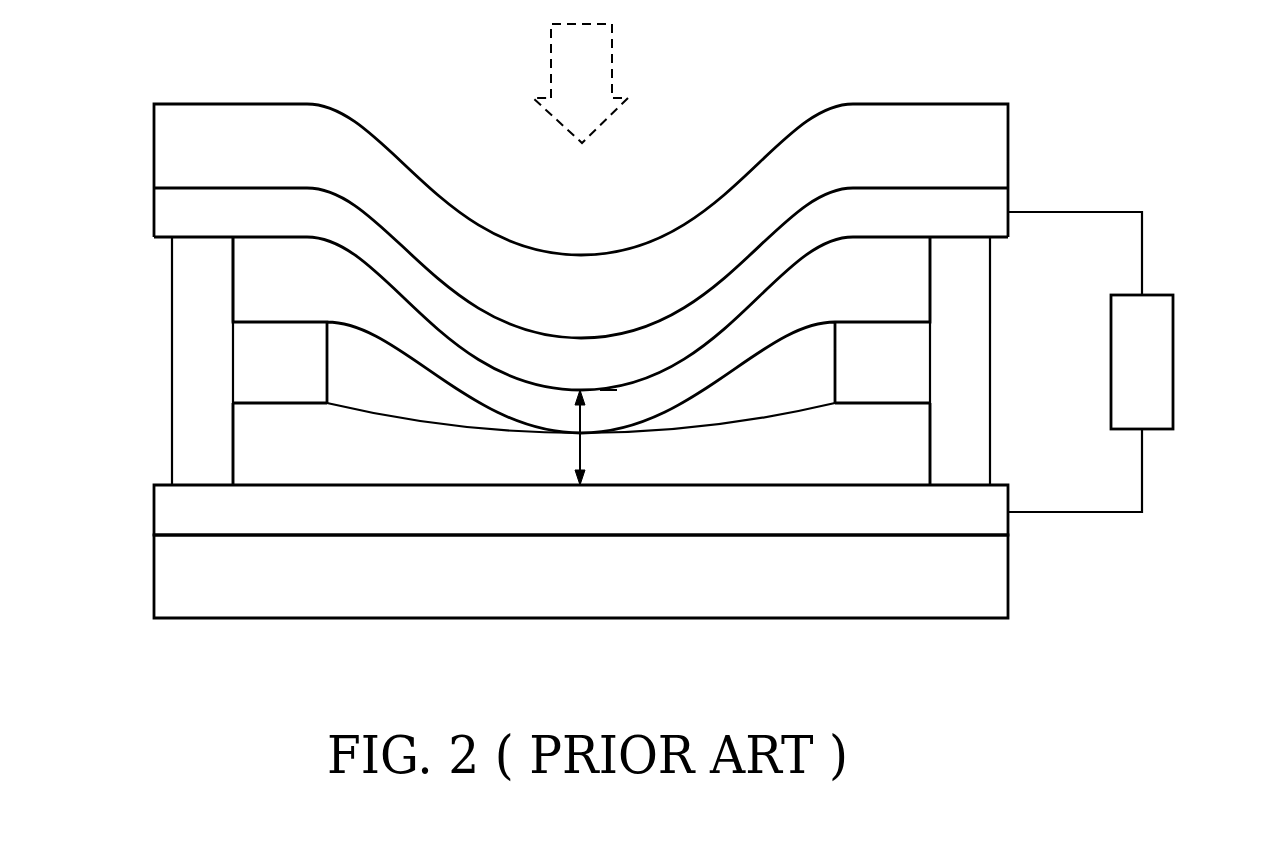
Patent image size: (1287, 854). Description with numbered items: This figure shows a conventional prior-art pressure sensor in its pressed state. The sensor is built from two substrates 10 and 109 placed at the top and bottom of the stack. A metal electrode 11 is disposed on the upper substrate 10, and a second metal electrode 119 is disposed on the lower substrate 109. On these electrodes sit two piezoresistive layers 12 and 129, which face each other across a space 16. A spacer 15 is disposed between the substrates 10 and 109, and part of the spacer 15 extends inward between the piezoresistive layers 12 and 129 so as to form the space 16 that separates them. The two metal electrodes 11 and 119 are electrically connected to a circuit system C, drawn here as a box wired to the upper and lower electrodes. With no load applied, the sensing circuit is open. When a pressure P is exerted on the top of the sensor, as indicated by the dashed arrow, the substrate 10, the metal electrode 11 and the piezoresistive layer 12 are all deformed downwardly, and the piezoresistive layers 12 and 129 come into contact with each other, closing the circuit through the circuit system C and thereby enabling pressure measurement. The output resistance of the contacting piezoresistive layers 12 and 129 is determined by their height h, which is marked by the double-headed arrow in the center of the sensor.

The substrate 10 is at (173, 148).
The metal electrode 11 is at (173, 212).
The piezoresistive layer 12 is at (272, 282).
The spacer 15 is at (203, 346).
The space 16 is at (357, 389).
The piezoresistive layer 129 is at (272, 462).
The metal electrode 119 is at (173, 514).
The substrate 109 is at (173, 578).
The pressure P is at (580, 83).
The height h is at (596, 437).
The circuit system C is at (1150, 360).